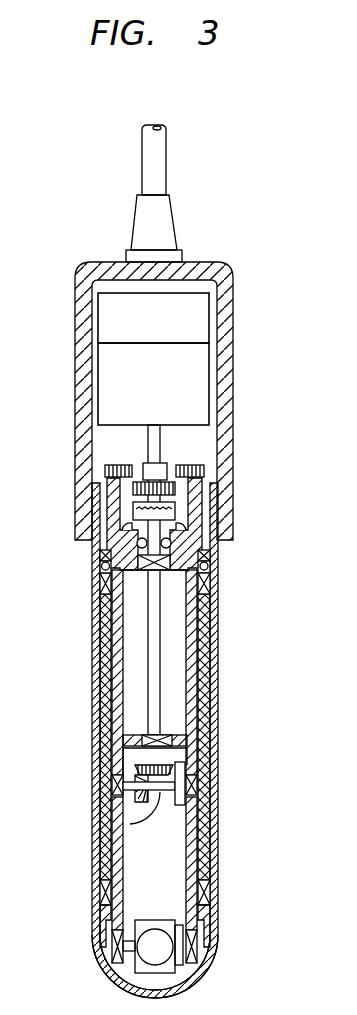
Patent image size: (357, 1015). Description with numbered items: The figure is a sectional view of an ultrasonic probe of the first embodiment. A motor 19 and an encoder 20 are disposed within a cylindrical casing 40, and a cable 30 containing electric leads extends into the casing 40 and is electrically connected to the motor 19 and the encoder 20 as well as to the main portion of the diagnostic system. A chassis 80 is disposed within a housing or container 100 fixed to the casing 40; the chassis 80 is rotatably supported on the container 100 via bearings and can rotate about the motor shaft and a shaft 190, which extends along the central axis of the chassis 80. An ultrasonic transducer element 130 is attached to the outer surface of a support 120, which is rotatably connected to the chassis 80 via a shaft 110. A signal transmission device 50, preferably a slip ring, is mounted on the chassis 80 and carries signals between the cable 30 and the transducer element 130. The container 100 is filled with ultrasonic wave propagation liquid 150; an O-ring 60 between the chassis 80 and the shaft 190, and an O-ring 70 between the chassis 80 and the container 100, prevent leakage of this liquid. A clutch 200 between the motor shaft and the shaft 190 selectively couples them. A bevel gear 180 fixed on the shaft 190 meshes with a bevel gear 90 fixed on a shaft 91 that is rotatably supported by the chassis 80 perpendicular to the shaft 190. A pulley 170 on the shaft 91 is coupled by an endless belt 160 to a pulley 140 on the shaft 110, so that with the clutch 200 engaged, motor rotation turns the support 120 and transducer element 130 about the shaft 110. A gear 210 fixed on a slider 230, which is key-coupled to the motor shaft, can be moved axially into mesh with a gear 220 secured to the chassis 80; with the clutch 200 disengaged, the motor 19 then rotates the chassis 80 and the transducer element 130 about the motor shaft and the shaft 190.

The cable 30 is at (148, 158).
The encoder 20 is at (110, 313).
The motor 19 is at (110, 377).
The cylindrical casing 40 is at (85, 440).
The slider 230 is at (162, 471).
The gear 220 is at (204, 468).
The gear 210 is at (176, 489).
The clutch 200 is at (176, 514).
The signal transmission device 50 is at (138, 541).
The O-ring 60 is at (117, 540).
The O-ring 70 is at (102, 568).
The chassis 80 is at (120, 630).
The shaft 190 is at (155, 630).
The bevel gear 180 is at (185, 765).
The pulley 170 is at (185, 803).
The endless belt 160 is at (200, 857).
The ultrasonic wave propagation liquid 150 is at (174, 875).
The pulley 140 is at (192, 935).
The ultrasonic transducer element 130 is at (172, 958).
The bevel gear 90 is at (112, 787).
The shaft 91 is at (115, 832).
The container 100 is at (100, 867).
The shaft 110 is at (108, 947).
The support 120 is at (112, 978).